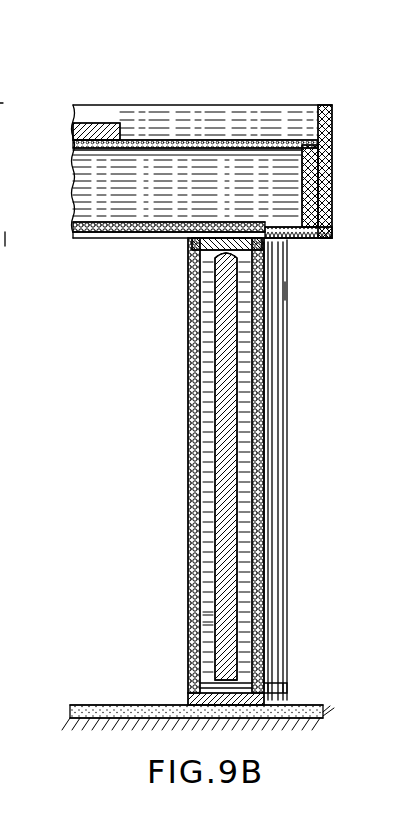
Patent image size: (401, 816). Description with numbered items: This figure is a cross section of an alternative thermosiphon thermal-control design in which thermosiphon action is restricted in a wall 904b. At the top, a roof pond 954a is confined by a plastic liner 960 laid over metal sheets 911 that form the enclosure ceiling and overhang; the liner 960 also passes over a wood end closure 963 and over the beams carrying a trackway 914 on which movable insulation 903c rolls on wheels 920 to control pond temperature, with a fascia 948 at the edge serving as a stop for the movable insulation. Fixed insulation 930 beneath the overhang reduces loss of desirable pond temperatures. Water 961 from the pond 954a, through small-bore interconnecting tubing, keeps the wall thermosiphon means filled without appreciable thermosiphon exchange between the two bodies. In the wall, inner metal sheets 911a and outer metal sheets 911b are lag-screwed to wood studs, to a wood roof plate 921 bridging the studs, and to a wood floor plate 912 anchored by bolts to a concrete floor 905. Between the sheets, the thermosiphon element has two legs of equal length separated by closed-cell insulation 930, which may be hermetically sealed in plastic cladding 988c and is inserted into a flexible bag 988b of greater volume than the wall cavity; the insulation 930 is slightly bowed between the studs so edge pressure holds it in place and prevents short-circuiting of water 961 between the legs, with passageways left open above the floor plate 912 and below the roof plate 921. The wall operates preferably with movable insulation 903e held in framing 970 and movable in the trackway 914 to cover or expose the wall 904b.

The movable insulation 903c is at (115, 128).
The wheels 920 is at (88, 132).
The trackway 914 is at (233, 142).
The fascia 948 is at (333, 193).
The plastic liner 960 is at (306, 218).
The roof pond 954a is at (118, 197).
The water 961 is at (110, 203).
The metal sheets 911 is at (122, 233).
The wood roof plate 921 is at (190, 245).
The wood end closure 963 is at (309, 238).
The insulation 930 is at (227, 421).
The inner metal sheets 911a is at (192, 393).
The outer metal sheets 911b is at (258, 543).
The framing 970 is at (280, 358).
The movable insulation 903e is at (287, 411).
The wall 904b is at (258, 498).
The plastic cladding 988c is at (215, 626).
The flexible bag 988b is at (190, 685).
The wood floor plate 912 is at (188, 695).
The concrete floor 905 is at (110, 712).